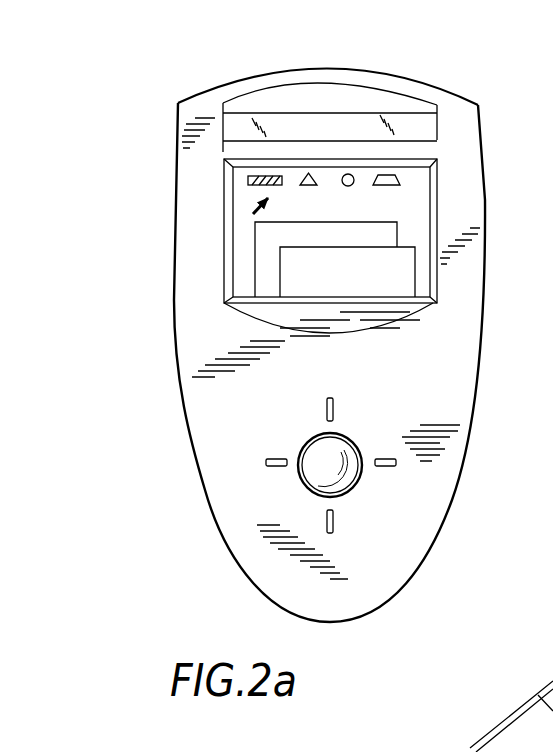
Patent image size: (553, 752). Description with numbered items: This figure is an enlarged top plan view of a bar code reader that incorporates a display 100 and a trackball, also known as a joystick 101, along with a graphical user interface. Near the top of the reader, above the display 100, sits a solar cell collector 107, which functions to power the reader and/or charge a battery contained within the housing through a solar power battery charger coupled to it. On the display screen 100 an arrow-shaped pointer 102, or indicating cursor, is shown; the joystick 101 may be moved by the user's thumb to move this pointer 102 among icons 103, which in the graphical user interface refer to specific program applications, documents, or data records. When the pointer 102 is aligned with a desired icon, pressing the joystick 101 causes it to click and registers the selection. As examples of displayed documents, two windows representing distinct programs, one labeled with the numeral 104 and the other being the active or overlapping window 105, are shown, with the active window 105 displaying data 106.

The display 100 is at (322, 239).
The joystick 101 is at (312, 464).
The arrow-shaped pointer 102 is at (246, 206).
The icons 103 is at (360, 178).
The first window P1 104 is at (254, 231).
The active window 105 is at (279, 272).
The data 106 is at (408, 284).
The solar cell collector 107 is at (296, 110).